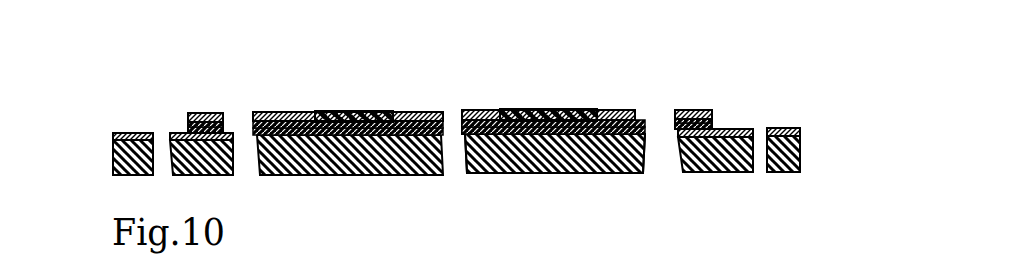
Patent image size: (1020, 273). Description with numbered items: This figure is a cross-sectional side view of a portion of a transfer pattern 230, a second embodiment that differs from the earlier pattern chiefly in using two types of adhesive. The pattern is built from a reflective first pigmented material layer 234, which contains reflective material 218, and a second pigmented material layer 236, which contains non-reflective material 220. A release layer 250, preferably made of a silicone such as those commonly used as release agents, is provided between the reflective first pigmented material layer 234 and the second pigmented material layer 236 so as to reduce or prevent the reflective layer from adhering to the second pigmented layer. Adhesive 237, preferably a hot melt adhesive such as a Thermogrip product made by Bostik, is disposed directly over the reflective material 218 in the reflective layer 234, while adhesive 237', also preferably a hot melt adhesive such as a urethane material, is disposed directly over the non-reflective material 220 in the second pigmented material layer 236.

The reflective material 218 is at (337, 165).
The non-reflective material 220 is at (280, 113).
The transfer pattern 230 is at (568, 66).
The reflective first pigmented material layer 234 is at (182, 132).
The second pigmented material layer 236 is at (187, 124).
The adhesive 237 is at (456, 97).
The adhesive 237' is at (456, 74).
The release layer 250 is at (252, 132).